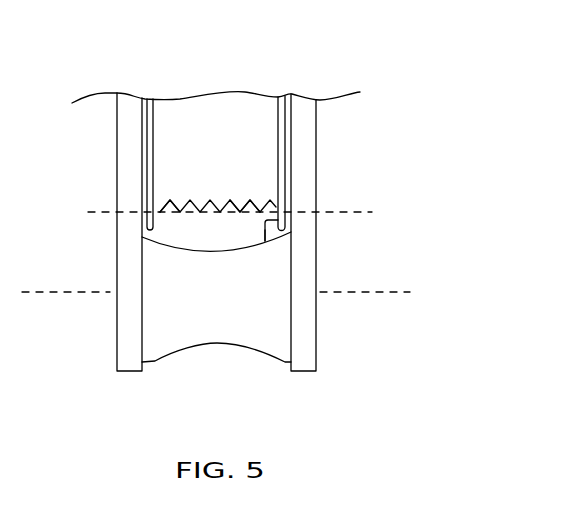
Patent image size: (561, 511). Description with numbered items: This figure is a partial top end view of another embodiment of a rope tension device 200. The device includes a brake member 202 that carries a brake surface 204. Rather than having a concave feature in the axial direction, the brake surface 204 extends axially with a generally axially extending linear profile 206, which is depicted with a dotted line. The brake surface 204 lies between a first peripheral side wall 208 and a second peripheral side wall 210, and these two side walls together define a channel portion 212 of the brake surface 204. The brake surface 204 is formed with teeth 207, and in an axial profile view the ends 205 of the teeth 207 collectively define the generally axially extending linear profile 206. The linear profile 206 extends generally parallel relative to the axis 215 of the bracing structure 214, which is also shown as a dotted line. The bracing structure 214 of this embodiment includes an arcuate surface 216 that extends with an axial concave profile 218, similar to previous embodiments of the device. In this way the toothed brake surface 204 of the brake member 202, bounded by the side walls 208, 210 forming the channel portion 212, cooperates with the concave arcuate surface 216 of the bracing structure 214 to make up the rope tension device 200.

The rope tension device 200 is at (382, 118).
The brake member 202 is at (241, 96).
The brake surface 204 is at (185, 236).
The ends of the teeth 205 is at (167, 206).
The linear profile 206 is at (356, 214).
The teeth 207 is at (245, 205).
The first peripheral side wall 208 is at (150, 229).
The second peripheral side wall 210 is at (288, 227).
The channel portion 212 is at (266, 241).
The bracing structure 214 is at (240, 355).
The axis 215 is at (378, 294).
The arcuate surface 216 is at (210, 236).
The axial concave profile 218 is at (219, 252).